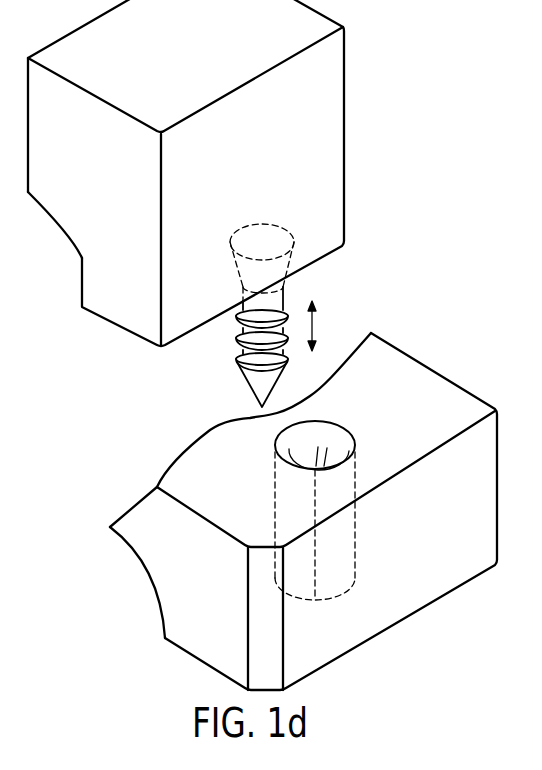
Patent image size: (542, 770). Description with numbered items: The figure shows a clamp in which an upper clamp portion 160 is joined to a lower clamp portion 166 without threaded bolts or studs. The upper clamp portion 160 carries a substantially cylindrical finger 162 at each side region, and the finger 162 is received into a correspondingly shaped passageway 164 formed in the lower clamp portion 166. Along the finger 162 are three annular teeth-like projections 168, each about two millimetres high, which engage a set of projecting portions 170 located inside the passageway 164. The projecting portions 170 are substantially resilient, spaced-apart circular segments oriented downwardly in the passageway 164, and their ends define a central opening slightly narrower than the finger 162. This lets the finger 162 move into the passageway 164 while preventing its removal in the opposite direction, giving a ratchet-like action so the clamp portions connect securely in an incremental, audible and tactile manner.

The upper clamp portion 160 is at (333, 98).
The finger 162 is at (156, 315).
The passageway 164 is at (291, 450).
The lower clamp portion 166 is at (165, 607).
The annular teeth-like projections 168 is at (234, 323).
The projecting portions 170 is at (305, 454).